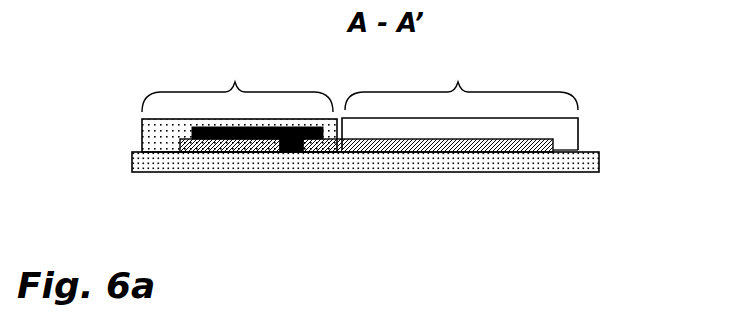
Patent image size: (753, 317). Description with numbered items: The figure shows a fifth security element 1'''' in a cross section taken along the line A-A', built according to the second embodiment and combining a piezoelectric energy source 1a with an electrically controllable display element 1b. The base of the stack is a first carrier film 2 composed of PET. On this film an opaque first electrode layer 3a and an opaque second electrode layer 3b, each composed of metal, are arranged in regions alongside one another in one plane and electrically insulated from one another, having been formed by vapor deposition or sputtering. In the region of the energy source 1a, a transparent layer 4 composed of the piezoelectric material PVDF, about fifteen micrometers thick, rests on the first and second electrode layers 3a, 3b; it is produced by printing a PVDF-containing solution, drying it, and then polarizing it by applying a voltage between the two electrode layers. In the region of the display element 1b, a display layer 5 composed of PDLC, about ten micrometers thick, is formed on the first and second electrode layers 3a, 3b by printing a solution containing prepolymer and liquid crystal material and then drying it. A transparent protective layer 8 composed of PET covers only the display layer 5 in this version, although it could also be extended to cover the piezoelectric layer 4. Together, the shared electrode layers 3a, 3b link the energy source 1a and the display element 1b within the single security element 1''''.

The first carrier film 2 is at (500, 162).
The first electrode layer 3a is at (214, 150).
The second electrode layer 3b is at (407, 151).
The transparent layer composed of piezoelectric material 4 is at (580, 127).
The display layer 5 is at (290, 150).
The transparent protective layer 8 is at (140, 120).
The piezoelectric energy source 1a is at (461, 83).
The electrically controllable display element 1b is at (237, 84).
The fifth security element 1'''' is at (425, 123).